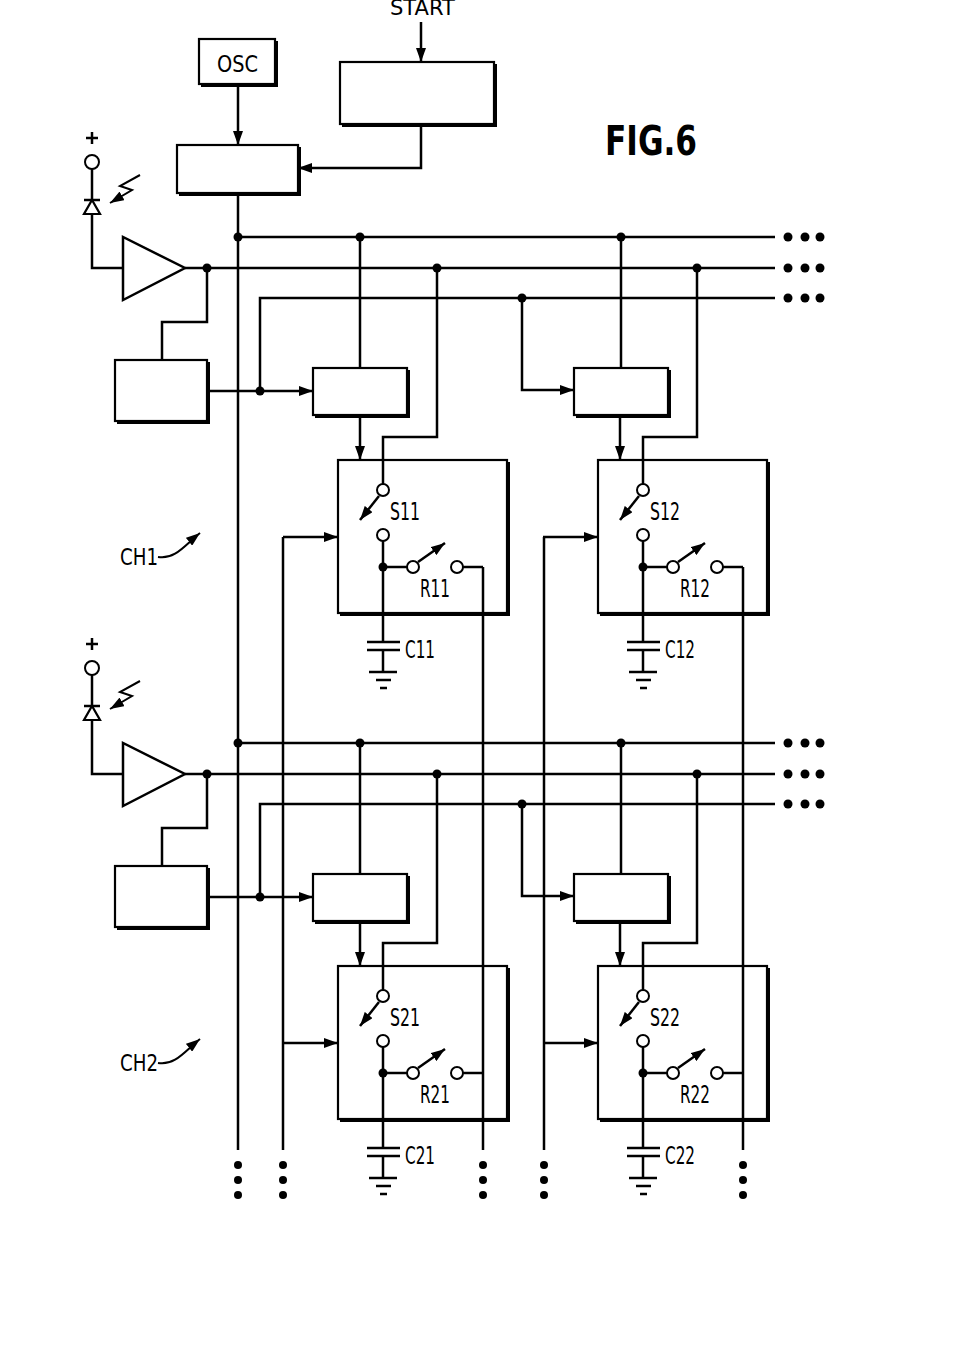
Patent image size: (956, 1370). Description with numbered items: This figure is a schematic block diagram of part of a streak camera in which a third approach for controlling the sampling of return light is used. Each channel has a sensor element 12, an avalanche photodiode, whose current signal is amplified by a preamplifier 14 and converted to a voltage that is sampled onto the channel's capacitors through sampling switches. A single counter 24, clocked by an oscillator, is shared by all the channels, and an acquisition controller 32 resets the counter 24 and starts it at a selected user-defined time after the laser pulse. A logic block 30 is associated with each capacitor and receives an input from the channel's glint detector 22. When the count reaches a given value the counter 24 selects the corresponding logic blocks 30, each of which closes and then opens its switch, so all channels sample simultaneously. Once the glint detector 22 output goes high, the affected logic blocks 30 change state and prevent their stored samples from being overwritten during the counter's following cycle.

The sensor element 12 is at (84, 205).
The preamplifier 14 is at (155, 250).
The glint detector 22 is at (160, 423).
The counter 24 is at (277, 145).
The logic block 30 is at (393, 368).
The acquisition controller 32 is at (495, 92).